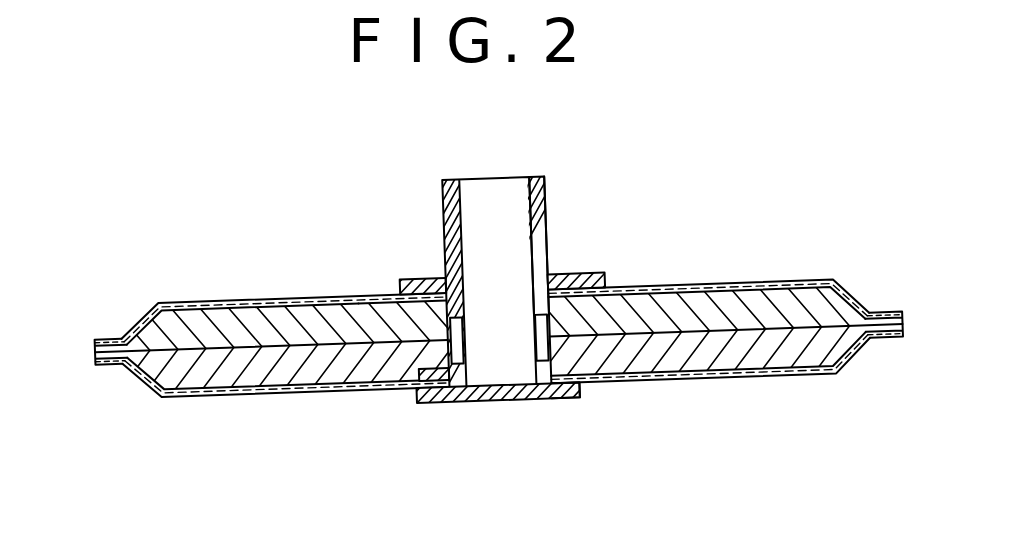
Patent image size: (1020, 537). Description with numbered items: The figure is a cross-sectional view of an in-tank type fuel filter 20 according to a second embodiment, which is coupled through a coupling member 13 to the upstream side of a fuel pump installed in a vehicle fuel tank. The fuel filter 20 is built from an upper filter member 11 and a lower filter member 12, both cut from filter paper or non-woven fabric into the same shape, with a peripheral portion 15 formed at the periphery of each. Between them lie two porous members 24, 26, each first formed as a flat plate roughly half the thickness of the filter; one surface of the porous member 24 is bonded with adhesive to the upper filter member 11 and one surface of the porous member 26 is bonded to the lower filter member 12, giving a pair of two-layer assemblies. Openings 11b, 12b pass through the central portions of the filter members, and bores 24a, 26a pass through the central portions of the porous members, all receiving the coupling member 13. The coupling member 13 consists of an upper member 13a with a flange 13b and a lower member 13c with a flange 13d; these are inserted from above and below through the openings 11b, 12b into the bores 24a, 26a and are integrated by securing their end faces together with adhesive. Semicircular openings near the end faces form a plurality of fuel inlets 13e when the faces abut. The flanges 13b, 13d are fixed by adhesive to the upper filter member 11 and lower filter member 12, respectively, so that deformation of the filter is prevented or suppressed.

The upper filter member 11 is at (227, 300).
The opening 11b is at (445, 290).
The lower filter member 12 is at (203, 397).
The opening 12b is at (432, 386).
The coupling member 13 is at (548, 198).
The upper member 13a is at (553, 248).
The flange 13b is at (590, 278).
The lower member 13c is at (533, 400).
The flange 13d is at (585, 393).
The fuel inlets 13e is at (458, 340).
The peripheral portion 15 is at (118, 339).
The fuel filter 20 is at (500, 267).
The porous member 24 is at (762, 288).
The bore 24a is at (404, 292).
The porous member 26 is at (298, 350).
The bore 26a is at (553, 341).